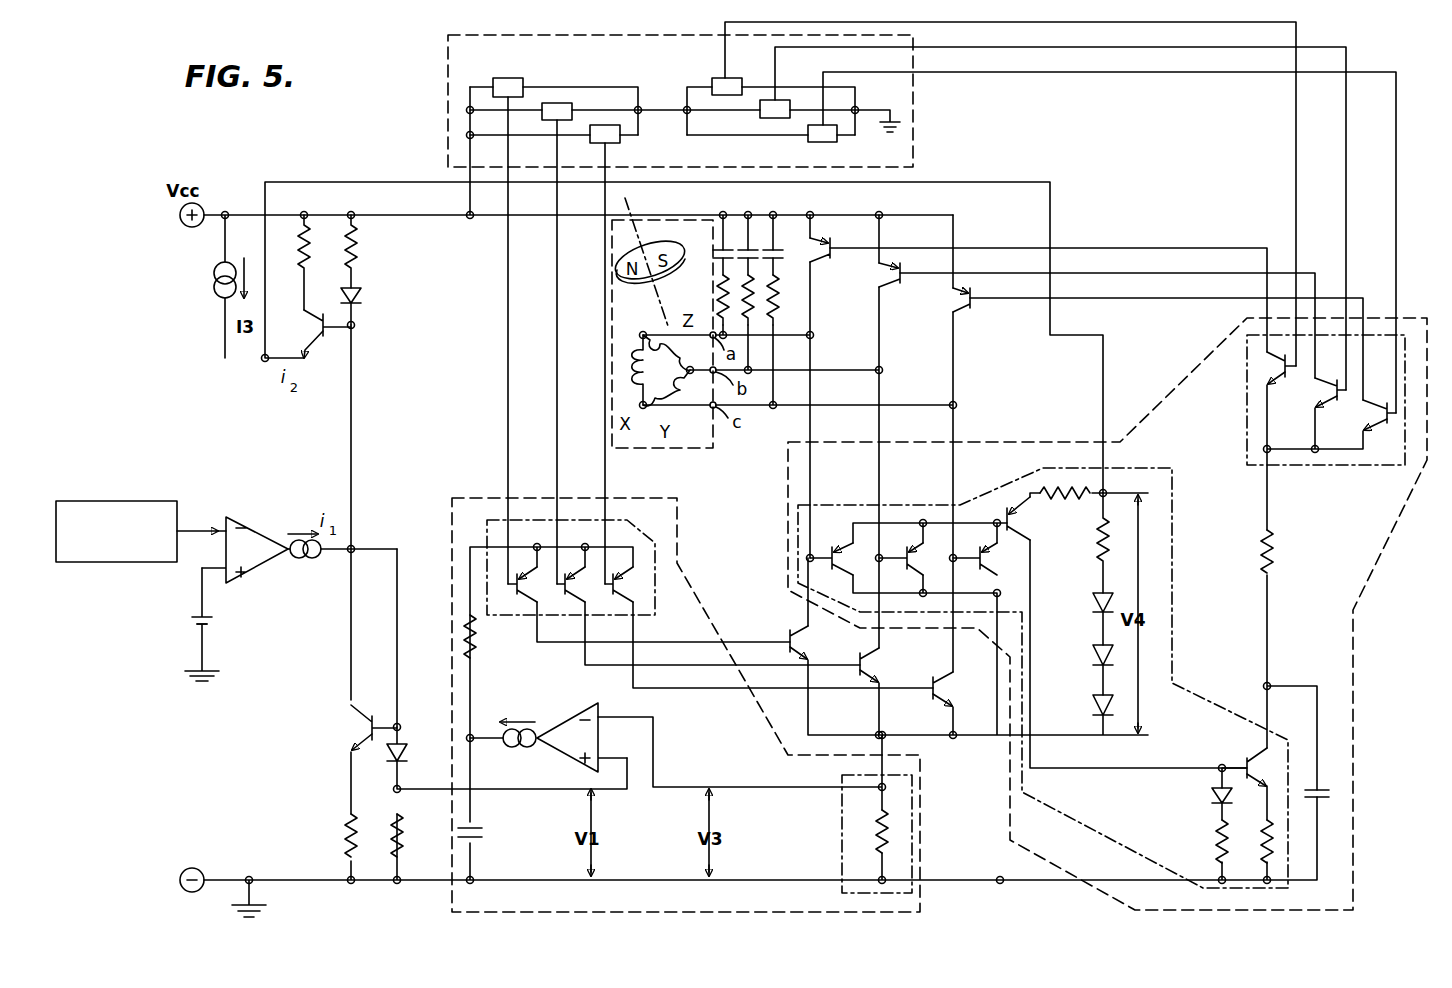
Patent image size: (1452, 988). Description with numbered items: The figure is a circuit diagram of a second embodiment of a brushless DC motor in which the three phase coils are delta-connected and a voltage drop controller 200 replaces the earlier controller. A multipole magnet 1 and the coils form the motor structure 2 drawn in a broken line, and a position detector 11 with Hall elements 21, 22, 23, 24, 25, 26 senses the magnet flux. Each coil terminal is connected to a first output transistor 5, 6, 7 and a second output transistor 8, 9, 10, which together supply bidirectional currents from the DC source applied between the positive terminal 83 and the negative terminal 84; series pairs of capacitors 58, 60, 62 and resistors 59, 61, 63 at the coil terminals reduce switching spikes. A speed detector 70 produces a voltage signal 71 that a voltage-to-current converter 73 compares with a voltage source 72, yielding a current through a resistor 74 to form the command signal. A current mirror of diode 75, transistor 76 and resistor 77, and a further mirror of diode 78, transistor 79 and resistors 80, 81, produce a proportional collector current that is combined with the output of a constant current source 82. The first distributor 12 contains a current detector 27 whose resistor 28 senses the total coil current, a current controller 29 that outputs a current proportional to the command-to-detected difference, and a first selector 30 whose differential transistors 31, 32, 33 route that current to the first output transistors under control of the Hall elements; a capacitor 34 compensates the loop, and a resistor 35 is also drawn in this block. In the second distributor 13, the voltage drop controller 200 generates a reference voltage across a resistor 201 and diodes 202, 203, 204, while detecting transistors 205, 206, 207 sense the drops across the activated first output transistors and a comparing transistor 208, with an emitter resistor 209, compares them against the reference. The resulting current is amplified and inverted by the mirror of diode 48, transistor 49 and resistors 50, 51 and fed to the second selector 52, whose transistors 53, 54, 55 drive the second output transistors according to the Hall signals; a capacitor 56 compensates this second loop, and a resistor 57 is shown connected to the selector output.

The magnet 1 is at (645, 284).
The motor structure 2 is at (692, 448).
The first output transistor 5 is at (792, 628).
The first output transistor 6 is at (865, 652).
The first output transistor 7 is at (938, 676).
The second output transistor 8 is at (826, 258).
The second output transistor 9 is at (895, 282).
The second output transistor 10 is at (968, 310).
The position detector 11 is at (915, 135).
The first distributor 12 is at (708, 912).
The second distributor 13 is at (1357, 772).
The Hall element 21 is at (505, 78).
The Hall element 22 is at (554, 103).
The Hall element 23 is at (603, 125).
The Hall element 24 is at (712, 80).
The Hall element 25 is at (760, 118).
The Hall element 26 is at (812, 142).
The current detector 27 is at (842, 852).
The resistor 28 is at (874, 848).
The current controller 29 is at (553, 722).
The first selector 30 is at (527, 618).
The transistor 31 is at (525, 592).
The transistor 32 is at (575, 592).
The transistor 33 is at (625, 592).
The capacitor 34 is at (480, 833).
The resistor 35 is at (470, 660).
The diode 48 is at (1210, 796).
The transistor 49 is at (1252, 758).
The resistor 50 is at (1215, 838).
The resistor 51 is at (1259, 835).
The second selector 52 is at (1245, 428).
The transistor 53 is at (1275, 380).
The transistor 54 is at (1325, 404).
The transistor 55 is at (1372, 426).
The capacitor 56 is at (1330, 792).
The resistor 57 is at (1278, 568).
The capacitor 58 is at (720, 250).
The resistor 59 is at (715, 290).
The capacitor 60 is at (751, 248).
The resistor 61 is at (775, 320).
The capacitor 62 is at (776, 250).
The resistor 63 is at (775, 295).
The speed detector 70 is at (120, 500).
The voltage signal 71 is at (190, 530).
The voltage source 72 is at (195, 620).
The voltage-to-current converter 73 is at (252, 527).
The resistor 74 is at (405, 840).
The diode 75 is at (408, 752).
The transistor 76 is at (360, 716).
The resistor 77 is at (344, 836).
The diode 78 is at (363, 298).
The transistor 79 is at (310, 346).
The resistor 80 is at (360, 258).
The resistor 81 is at (311, 262).
The constant current source 82 is at (213, 281).
The positive terminal 83 is at (185, 227).
The negative terminal 84 is at (187, 862).
The voltage drop controller 200 is at (1178, 575).
The resistor 201 is at (1095, 550).
The diode 202 is at (1093, 607).
The diode 203 is at (1093, 656).
The diode 204 is at (1093, 706).
The detecting transistor 205 is at (845, 545).
The detecting transistor 206 is at (915, 545).
The detecting transistor 207 is at (987, 545).
The comparing transistor 208 is at (1011, 504).
The resistor 209 is at (1068, 500).